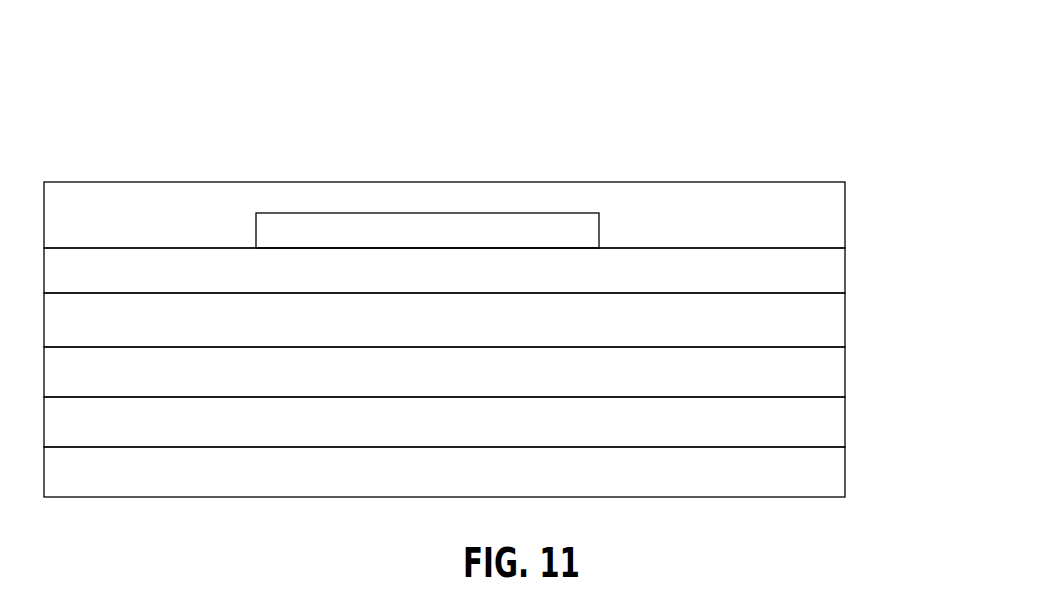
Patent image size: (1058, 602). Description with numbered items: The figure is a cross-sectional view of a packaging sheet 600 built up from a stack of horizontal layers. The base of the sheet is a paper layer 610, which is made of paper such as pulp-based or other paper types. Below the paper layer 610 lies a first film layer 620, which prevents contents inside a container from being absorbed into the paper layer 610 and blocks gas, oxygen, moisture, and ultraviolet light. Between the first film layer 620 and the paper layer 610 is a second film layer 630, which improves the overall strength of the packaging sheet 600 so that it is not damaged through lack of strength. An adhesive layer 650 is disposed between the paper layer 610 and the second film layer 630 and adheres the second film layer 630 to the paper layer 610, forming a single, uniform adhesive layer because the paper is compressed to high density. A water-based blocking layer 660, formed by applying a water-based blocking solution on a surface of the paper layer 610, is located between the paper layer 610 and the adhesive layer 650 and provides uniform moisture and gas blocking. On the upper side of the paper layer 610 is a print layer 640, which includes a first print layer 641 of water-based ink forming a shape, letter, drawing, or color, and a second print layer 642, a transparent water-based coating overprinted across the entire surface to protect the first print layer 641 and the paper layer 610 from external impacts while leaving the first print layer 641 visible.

The packaging sheet 600 is at (940, 55).
The paper layer 610 is at (845, 258).
The first film layer 620 is at (845, 472).
The second film layer 630 is at (845, 422).
The print layer 640 is at (651, 76).
The first print layer 641 is at (562, 212).
The second print layer 642 is at (532, 181).
The adhesive layer 650 is at (845, 372).
The water-based blocking layer 660 is at (845, 319).